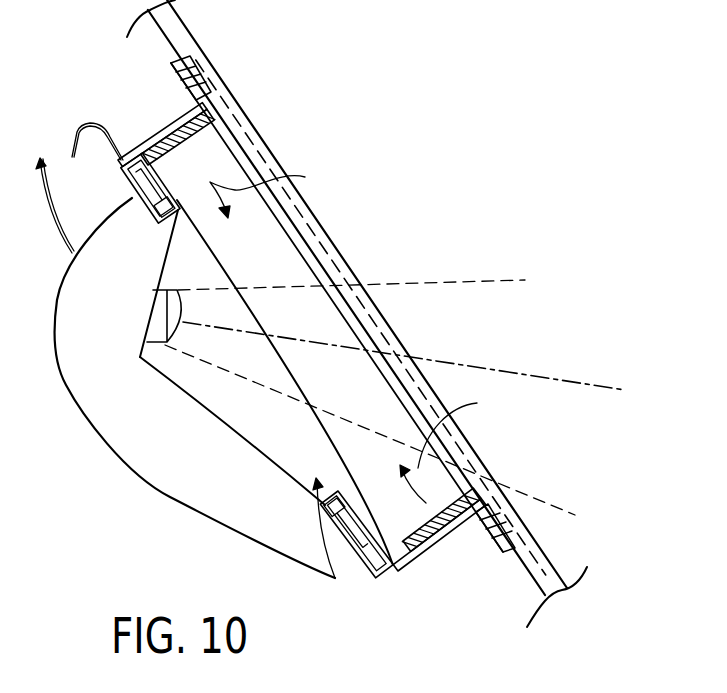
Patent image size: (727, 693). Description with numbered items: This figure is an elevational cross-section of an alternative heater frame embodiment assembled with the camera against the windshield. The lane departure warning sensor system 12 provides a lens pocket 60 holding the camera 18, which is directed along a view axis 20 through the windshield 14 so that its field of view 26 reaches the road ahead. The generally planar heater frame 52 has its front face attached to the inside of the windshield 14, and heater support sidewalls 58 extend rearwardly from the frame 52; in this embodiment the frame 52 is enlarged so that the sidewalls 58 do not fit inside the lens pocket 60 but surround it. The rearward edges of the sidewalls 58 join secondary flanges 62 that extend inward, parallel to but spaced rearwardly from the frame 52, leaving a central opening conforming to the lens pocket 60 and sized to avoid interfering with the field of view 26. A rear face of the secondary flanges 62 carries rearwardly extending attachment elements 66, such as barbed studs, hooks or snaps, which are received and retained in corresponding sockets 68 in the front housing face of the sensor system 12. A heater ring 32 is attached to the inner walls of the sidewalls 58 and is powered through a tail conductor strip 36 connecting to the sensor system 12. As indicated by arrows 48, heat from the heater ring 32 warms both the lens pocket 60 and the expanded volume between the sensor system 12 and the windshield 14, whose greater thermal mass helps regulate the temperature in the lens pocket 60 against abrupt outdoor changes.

The lane departure warning sensor system 12 is at (82, 440).
The windshield 14 is at (193, 45).
The camera 18 is at (153, 315).
The view axis 20 is at (553, 376).
The field of view 26 is at (480, 282).
The heater ring 32 is at (197, 142).
The tail conductor strip 36 is at (72, 123).
The arrows 48 is at (359, 334).
The heater frame 52 is at (172, 75).
The heater support sidewalls 58 is at (168, 127).
The lens pocket 60 is at (236, 420).
The secondary flanges 62 is at (148, 157).
The attachment elements 66 is at (126, 205).
The sockets 68 is at (142, 246).